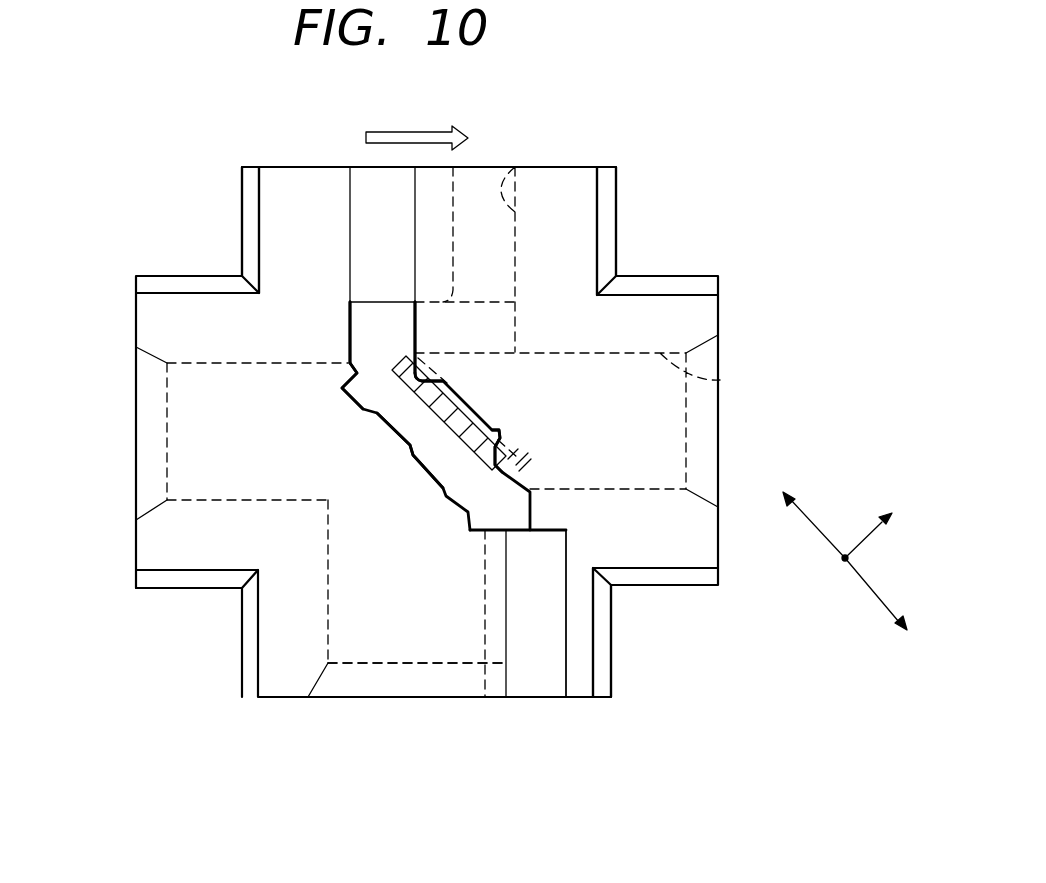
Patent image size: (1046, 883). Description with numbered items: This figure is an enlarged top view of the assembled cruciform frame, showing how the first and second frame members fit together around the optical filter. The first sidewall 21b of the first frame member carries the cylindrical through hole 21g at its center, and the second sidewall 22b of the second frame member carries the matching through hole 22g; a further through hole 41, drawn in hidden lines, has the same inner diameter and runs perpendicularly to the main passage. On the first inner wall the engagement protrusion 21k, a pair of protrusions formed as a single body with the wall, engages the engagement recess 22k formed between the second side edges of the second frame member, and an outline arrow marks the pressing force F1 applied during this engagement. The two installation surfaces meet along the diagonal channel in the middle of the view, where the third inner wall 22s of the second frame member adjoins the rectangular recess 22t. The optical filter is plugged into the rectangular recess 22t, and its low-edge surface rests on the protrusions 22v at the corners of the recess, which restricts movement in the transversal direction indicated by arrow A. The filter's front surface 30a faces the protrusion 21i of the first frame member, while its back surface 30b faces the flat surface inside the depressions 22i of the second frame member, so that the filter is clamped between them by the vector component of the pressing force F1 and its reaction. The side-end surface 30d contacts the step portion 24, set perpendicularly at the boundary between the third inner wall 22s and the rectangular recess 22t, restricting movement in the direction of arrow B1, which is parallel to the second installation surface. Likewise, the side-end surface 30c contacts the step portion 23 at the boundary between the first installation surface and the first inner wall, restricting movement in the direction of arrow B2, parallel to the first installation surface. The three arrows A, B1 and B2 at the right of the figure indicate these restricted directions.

The first sidewall 21b is at (242, 226).
The second sidewall 22b is at (617, 230).
The engagement protrusion 21k is at (390, 190).
The engagement recess 22k is at (498, 168).
The pressing force F1 is at (400, 133).
The through hole 22g is at (690, 356).
The through hole 21g is at (185, 458).
The protrusion 21i is at (402, 437).
The step portion 23 is at (340, 378).
The depression 22i is at (472, 420).
The front surface 30a is at (453, 437).
The side-end surface 30c is at (395, 363).
The back surface 30b is at (458, 403).
The protrusion 22v is at (413, 360).
The rectangular recess 22t is at (517, 450).
The step portion 24 is at (527, 475).
The side-end surface 30d is at (499, 476).
The third inner wall 22s is at (555, 673).
The through hole 41 is at (360, 643).
The arrow A is at (858, 542).
The arrow B1 is at (868, 590).
The arrow B2 is at (810, 525).